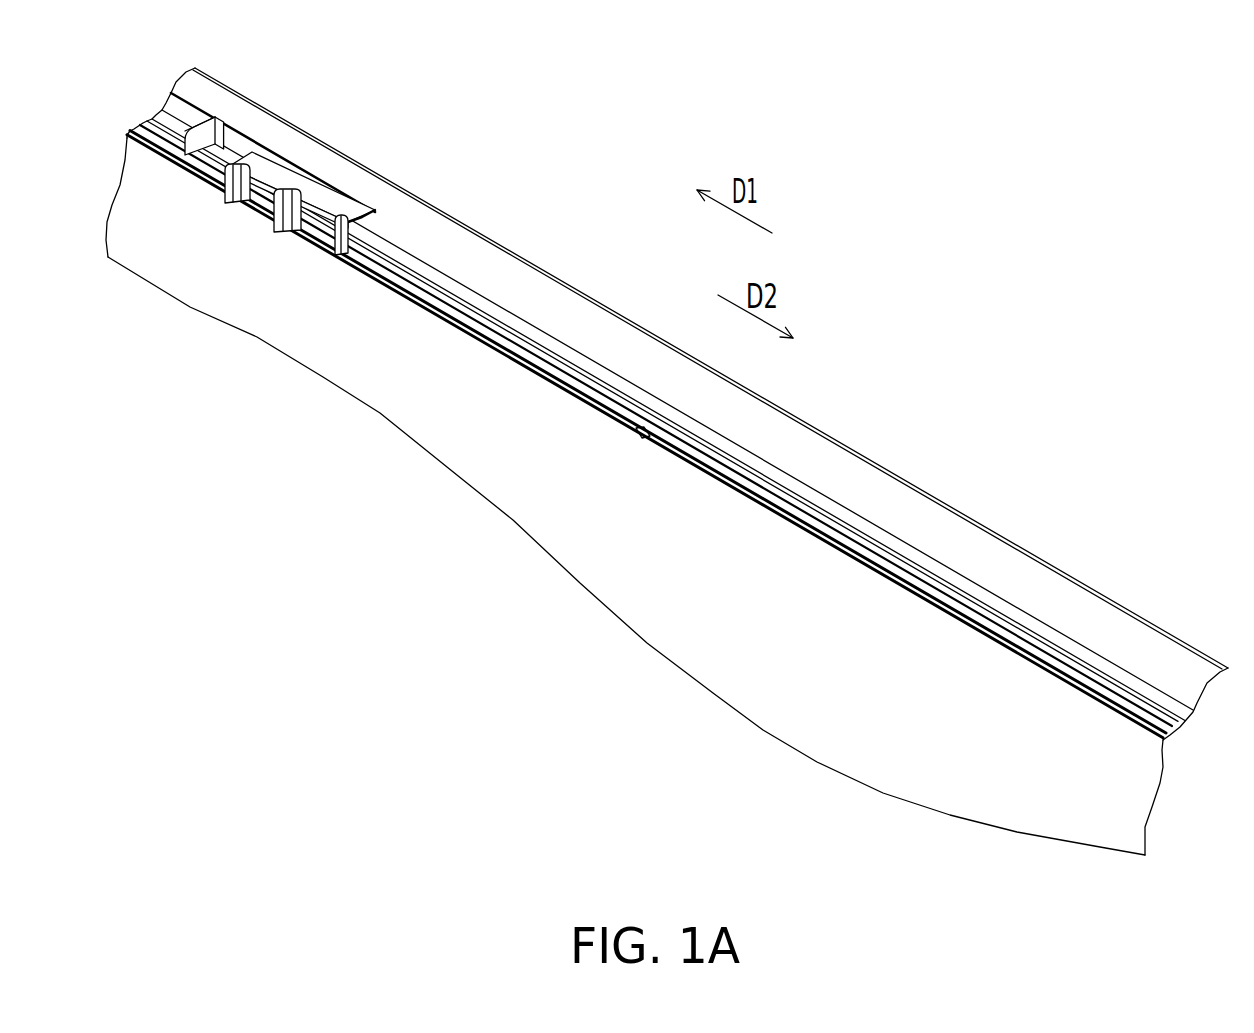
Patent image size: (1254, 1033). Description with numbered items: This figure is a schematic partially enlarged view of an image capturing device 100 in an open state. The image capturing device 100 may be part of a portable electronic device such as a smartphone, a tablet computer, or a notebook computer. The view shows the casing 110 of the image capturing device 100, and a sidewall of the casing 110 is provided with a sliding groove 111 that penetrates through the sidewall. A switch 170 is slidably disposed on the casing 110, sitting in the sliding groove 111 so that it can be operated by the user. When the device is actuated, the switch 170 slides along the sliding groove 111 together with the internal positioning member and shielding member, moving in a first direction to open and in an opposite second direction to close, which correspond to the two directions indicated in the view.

The image capturing device 100 is at (192, 791).
The casing 110 is at (462, 247).
The sliding groove 111 is at (230, 146).
The switch 170 is at (330, 197).